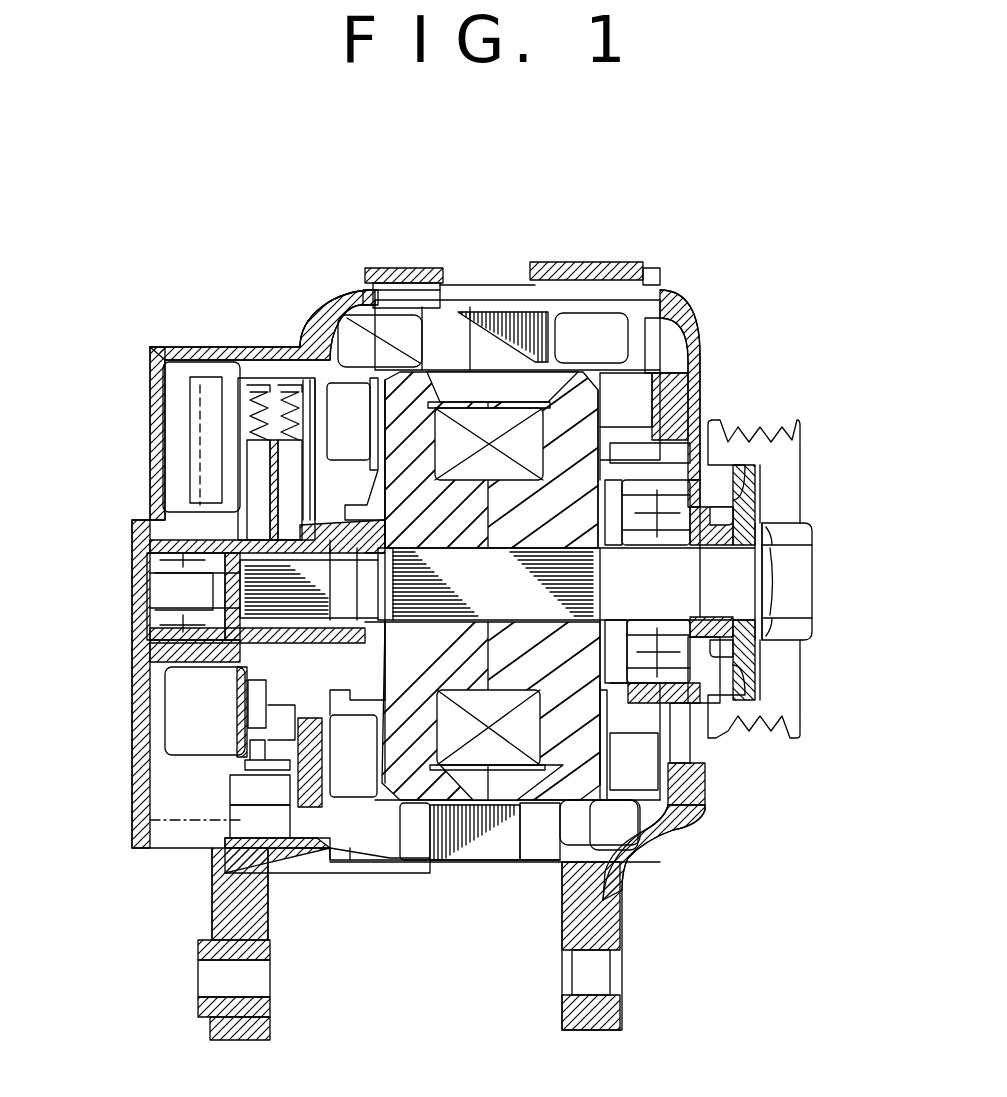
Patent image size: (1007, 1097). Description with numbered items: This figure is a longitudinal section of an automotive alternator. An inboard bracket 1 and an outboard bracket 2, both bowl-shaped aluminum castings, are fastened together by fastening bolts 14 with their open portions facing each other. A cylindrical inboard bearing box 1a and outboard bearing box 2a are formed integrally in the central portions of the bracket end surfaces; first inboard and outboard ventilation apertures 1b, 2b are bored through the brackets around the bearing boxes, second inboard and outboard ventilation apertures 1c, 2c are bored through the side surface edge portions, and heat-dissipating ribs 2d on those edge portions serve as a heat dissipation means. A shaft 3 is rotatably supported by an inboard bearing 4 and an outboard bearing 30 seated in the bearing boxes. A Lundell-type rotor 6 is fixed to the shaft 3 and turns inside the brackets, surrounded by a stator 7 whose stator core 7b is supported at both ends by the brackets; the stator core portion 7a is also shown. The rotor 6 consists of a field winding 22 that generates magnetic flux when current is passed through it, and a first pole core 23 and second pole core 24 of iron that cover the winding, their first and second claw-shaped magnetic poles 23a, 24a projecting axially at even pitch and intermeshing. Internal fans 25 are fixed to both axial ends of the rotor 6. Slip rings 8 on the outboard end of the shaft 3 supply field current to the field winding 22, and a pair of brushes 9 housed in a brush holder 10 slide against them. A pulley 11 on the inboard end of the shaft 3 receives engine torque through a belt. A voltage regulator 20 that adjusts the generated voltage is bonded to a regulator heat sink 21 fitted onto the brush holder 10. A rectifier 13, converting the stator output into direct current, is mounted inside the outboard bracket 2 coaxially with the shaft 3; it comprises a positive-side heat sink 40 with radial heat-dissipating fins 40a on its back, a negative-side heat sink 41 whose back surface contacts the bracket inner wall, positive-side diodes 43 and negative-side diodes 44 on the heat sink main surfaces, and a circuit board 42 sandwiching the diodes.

The inboard bracket 1 is at (690, 347).
The inboard bearing box 1a is at (745, 708).
The first inboard ventilation apertures 1b is at (688, 407).
The second inboard ventilation apertures 1c is at (683, 318).
The outboard bracket 2 is at (243, 343).
The outboard bearing box 2a is at (163, 537).
The first outboard ventilation apertures 2b is at (152, 445).
The second outboard ventilation apertures 2c is at (347, 310).
The heat-dissipating ribs 2d is at (356, 290).
The shaft 3 is at (748, 576).
The inboard bearing 4 is at (678, 503).
The rotor 6 is at (555, 945).
The stator 7 is at (515, 180).
The stator core 7a is at (400, 338).
The stator core 7b is at (490, 347).
The slip rings 8 is at (147, 636).
The brushes 9 is at (297, 497).
The brush holder 10 is at (258, 378).
The pulley 11 is at (790, 443).
The rectifier 13 is at (215, 745).
The fastening bolts 14 is at (613, 285).
The voltage regulator 20 is at (175, 400).
The regulator heat sink 21 is at (153, 400).
The field winding 22 is at (489, 750).
The first pole core 23 is at (438, 792).
The first claw-shaped magnetic poles 23a is at (317, 307).
The second pole core 24 is at (563, 772).
The second claw-shaped magnetic poles 24a is at (522, 387).
The internal fans 25 is at (635, 385).
The outboard bearing 30 is at (163, 562).
The positive-side heat sink 40 is at (222, 696).
The heat-dissipating fins 40a is at (190, 698).
The negative-side heat sink 41 is at (220, 813).
The circuit board 42 is at (220, 802).
The positive-side diodes 43 is at (264, 693).
The negative-side diodes 44 is at (220, 848).